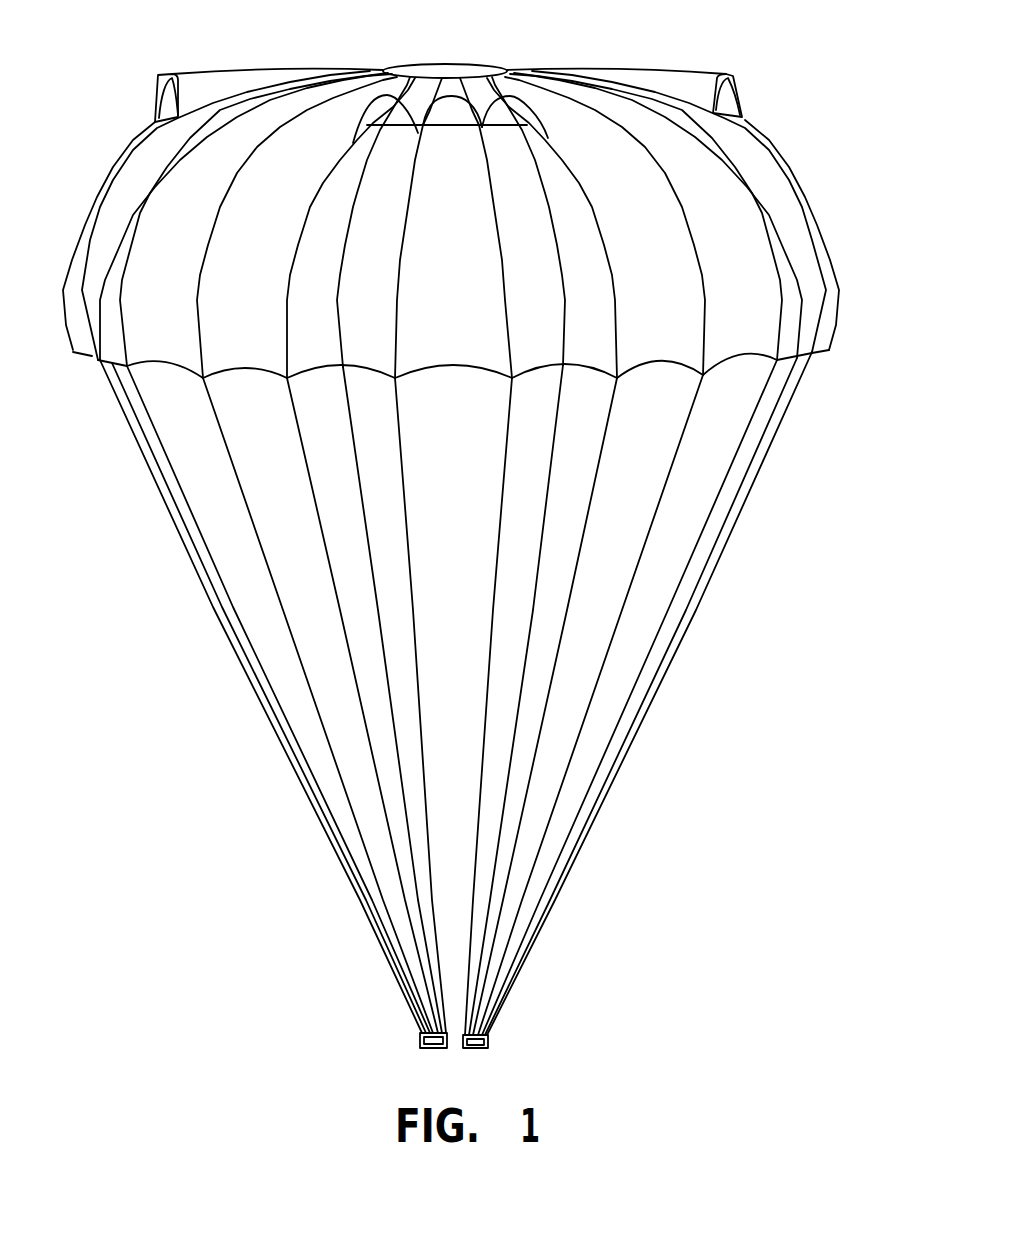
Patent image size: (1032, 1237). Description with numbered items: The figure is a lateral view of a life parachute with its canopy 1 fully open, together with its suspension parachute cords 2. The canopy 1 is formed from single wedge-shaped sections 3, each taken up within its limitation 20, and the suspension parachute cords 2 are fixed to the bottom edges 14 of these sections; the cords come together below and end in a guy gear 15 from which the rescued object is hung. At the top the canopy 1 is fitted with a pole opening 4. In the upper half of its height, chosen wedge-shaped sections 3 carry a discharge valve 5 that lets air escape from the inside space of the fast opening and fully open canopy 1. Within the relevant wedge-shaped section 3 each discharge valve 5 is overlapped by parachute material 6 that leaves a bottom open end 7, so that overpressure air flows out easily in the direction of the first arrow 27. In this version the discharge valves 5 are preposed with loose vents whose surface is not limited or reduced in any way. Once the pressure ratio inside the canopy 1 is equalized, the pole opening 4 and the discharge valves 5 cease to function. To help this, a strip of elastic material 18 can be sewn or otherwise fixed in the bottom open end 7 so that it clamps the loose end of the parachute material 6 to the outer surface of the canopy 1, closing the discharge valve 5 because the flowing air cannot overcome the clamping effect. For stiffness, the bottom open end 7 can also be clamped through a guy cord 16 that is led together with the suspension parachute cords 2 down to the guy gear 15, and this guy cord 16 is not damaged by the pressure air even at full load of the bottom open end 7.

The canopy 1 is at (838, 208).
The suspension parachute cords 2 is at (506, 435).
The wedge-shaped sections 3 is at (246, 333).
The pole opening 4 is at (415, 73).
The discharge valve 5 is at (395, 125).
The parachute material 6 is at (219, 82).
The bottom open end 7 is at (170, 106).
The bottom edges 14 is at (250, 372).
The guy gear 15 is at (488, 1040).
The guy cord 16 is at (213, 582).
The strip of elastic material 18 is at (179, 100).
The limitation 20 is at (300, 277).
The first arrow 27 is at (117, 123).